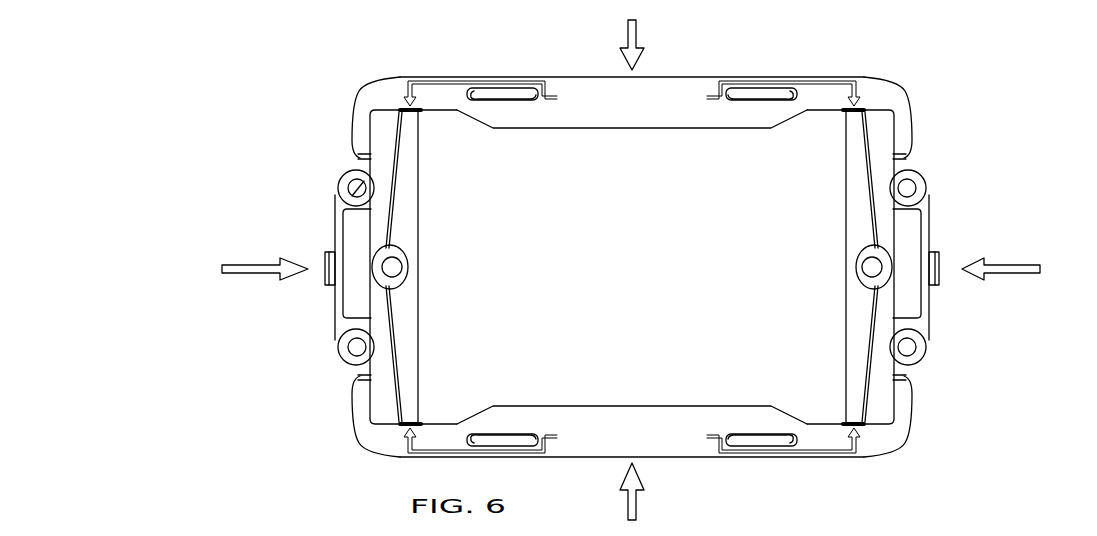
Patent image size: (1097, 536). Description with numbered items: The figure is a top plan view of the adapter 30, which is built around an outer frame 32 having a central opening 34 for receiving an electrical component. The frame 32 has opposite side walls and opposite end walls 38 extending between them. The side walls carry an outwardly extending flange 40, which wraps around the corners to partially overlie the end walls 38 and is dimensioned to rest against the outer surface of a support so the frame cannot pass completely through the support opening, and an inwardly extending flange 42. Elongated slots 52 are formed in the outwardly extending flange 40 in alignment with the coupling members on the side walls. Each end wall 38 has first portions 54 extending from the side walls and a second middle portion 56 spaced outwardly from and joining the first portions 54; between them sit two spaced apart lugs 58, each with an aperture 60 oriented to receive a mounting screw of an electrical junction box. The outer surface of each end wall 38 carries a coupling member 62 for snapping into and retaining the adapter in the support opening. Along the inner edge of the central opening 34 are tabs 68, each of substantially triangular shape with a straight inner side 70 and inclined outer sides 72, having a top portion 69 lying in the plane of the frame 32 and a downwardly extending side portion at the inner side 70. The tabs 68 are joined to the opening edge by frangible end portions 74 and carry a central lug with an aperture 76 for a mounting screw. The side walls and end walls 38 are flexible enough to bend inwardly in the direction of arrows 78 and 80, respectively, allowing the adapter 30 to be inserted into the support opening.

The adapter 30 is at (318, 85).
The outer frame 32 is at (704, 467).
The central opening 34 is at (653, 172).
The end walls 38 is at (916, 438).
The outwardly extending flange 40 is at (587, 93).
The inwardly extending flange 42 is at (530, 118).
The elongated slots 52 is at (483, 98).
The first portion 54 is at (352, 158).
The second middle portion 56 is at (337, 333).
The lugs 58 is at (347, 185).
The aperture 60 is at (357, 191).
The coupling member 62 is at (316, 290).
The tabs 68 is at (430, 324).
The top portion 69 is at (408, 366).
The straight inner side 70 is at (418, 290).
The inclined outer sides 72 is at (353, 424).
The frangible end portions 74 is at (422, 111).
The aperture 76 is at (398, 263).
The arrows 78 is at (640, 42).
The arrows 80 is at (238, 265).